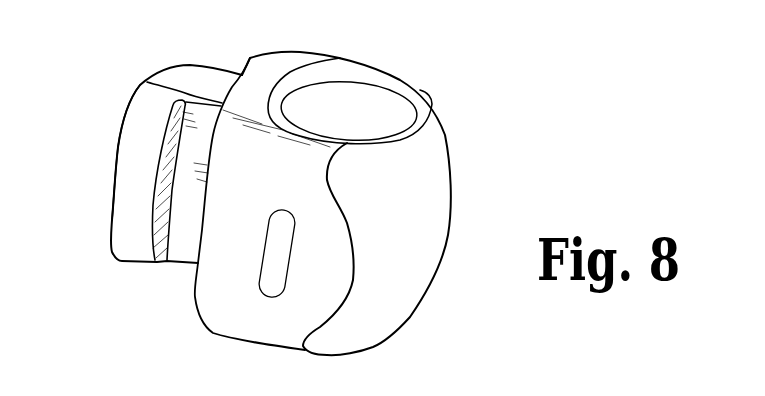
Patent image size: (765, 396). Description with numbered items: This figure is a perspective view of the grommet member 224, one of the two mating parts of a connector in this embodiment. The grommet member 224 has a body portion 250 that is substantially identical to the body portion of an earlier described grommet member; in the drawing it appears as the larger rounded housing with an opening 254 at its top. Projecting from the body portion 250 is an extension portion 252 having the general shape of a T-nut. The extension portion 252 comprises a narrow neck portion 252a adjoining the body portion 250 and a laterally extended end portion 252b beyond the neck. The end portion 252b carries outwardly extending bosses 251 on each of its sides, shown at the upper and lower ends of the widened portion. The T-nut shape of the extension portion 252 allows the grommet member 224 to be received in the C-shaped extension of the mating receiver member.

The grommet member 224 is at (520, 165).
The body portion 250 is at (407, 270).
The bosses 251 is at (153, 95).
The extension portion 252 is at (120, 172).
The neck portion 252a is at (197, 129).
The end portion 252b is at (118, 150).
The aperture 254 is at (347, 117).